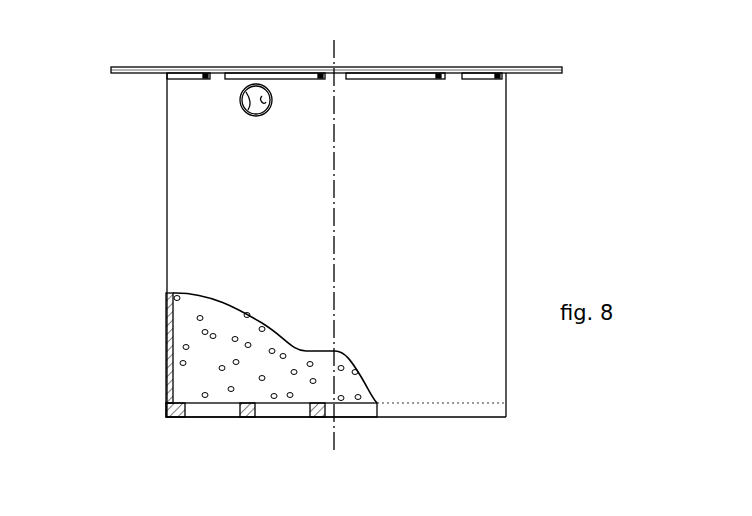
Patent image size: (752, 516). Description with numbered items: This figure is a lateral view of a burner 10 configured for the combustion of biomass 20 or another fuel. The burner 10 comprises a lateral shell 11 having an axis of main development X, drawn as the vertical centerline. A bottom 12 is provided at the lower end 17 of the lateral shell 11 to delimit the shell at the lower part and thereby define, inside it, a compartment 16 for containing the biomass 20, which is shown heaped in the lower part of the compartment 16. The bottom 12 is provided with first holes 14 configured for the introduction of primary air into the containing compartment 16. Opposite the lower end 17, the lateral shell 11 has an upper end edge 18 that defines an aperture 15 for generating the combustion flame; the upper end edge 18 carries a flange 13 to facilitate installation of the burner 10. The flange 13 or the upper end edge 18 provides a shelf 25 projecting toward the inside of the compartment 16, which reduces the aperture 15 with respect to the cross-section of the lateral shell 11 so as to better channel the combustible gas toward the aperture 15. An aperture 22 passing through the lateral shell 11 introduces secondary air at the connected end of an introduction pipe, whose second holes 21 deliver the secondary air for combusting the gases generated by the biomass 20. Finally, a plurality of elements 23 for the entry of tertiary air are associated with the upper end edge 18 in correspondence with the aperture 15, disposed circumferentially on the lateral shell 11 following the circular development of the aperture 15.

The burner 10 is at (80, 68).
The lateral shell 11 is at (163, 258).
The bottom 12 is at (316, 422).
The flange 13 is at (537, 69).
The first holes 14 is at (269, 412).
The aperture 15 is at (177, 66).
The compartment 16 is at (171, 343).
The lower end 17 is at (509, 416).
The upper end edge 18 is at (130, 78).
The biomass 20 is at (202, 377).
The second holes 21 is at (288, 10).
The aperture for introducing secondary air 22 is at (264, 110).
The elements for the entry of tertiary air 23 is at (362, 78).
The shelf 25 is at (550, 74).
The axis of main development X is at (334, 253).